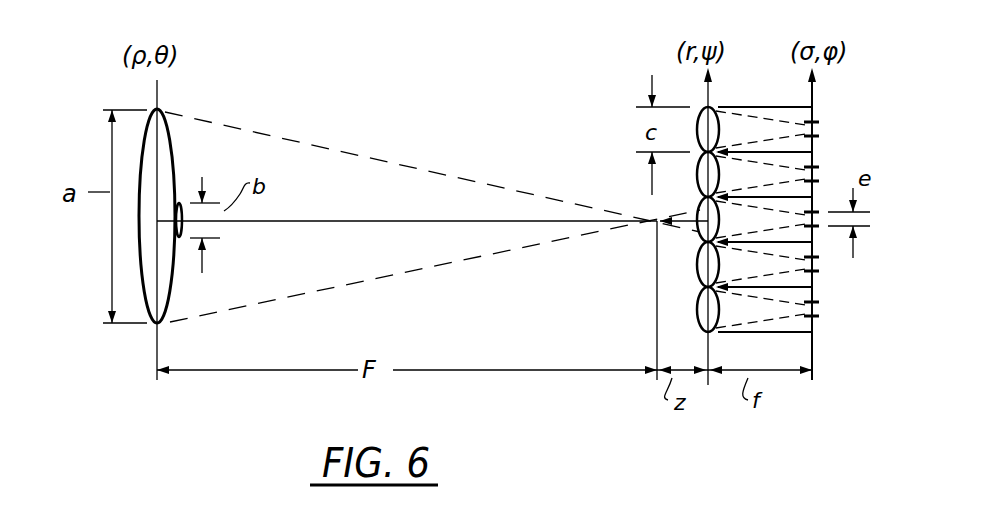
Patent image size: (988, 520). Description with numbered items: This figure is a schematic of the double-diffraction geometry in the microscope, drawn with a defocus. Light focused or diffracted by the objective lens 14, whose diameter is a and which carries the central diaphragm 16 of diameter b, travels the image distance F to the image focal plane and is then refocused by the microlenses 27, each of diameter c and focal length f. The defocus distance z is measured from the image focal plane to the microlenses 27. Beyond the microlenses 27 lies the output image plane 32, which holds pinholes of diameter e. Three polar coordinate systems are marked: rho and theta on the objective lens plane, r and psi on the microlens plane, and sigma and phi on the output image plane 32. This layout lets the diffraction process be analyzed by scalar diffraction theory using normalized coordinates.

The objective lens 14 is at (168, 127).
The central diaphragm 16 is at (182, 206).
The microlenses 27 is at (718, 112).
The output image plane 32 is at (818, 128).